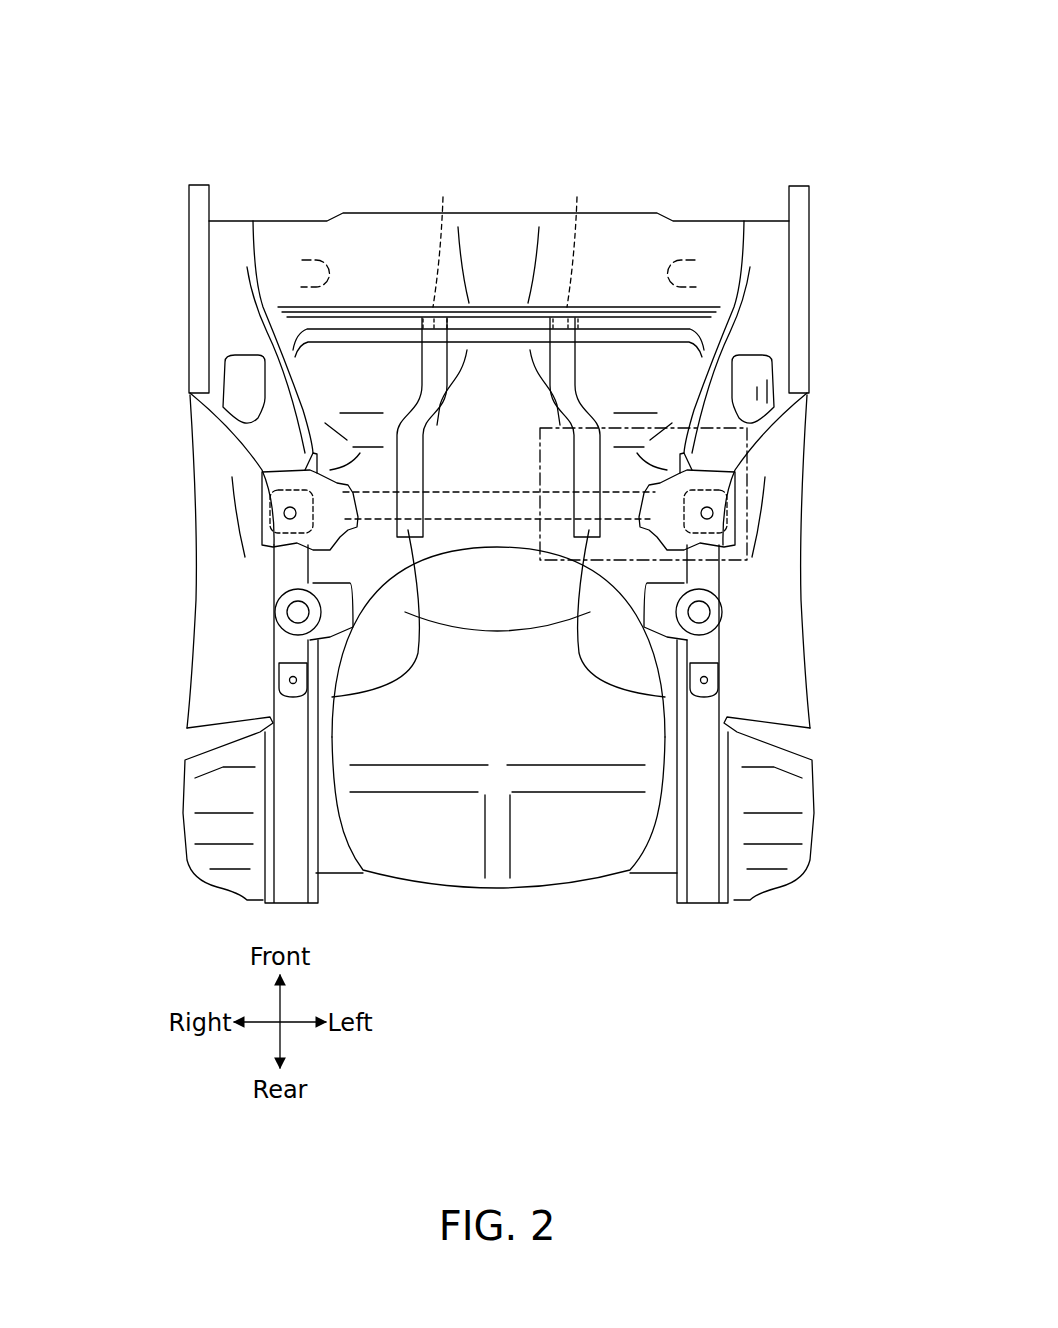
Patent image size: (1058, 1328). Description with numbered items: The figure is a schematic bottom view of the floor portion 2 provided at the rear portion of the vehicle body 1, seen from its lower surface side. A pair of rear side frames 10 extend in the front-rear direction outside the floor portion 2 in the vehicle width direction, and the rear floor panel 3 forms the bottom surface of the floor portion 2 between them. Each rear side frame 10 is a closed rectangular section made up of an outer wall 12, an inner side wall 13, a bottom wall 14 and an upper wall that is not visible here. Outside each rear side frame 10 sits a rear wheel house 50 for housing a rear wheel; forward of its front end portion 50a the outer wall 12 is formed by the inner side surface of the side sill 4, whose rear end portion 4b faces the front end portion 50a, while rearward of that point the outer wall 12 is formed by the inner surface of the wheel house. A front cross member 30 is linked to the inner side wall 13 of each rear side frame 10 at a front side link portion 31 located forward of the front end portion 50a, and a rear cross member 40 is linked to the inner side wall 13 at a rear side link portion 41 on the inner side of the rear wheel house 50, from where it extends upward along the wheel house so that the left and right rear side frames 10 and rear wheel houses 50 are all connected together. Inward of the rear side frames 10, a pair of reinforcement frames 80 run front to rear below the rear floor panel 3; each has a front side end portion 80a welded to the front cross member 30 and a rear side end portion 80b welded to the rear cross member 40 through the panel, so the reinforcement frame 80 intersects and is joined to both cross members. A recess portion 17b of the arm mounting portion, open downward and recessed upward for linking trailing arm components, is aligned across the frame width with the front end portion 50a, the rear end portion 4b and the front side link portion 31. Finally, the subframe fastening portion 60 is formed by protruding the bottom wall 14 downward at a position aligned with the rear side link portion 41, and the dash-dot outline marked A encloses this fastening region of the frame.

The vehicle body 1 is at (727, 116).
The floor portion 2 is at (525, 168).
The rear floor panel 3 is at (613, 247).
The side sill 4 is at (197, 228).
The rear end portion of side sill 4b is at (190, 394).
The rear side frame 10 is at (266, 440).
The outer wall 12 is at (213, 245).
The inner side wall 13 is at (260, 283).
The bottom wall 14 is at (228, 272).
The recess portion 17b is at (228, 362).
The front cross member 30 is at (634, 312).
The front side link portion 31 is at (716, 327).
The rear cross member 40 is at (611, 526).
The rear side link portion 41 is at (326, 515).
The rear wheel house 50 is at (219, 553).
The front end portion of rear wheel house 50a is at (196, 408).
The subframe fastening portion 60 is at (257, 506).
The reinforcement frame 80 is at (410, 387).
The front side end portion 80a is at (517, 237).
The rear side end portion 80b is at (395, 687).
The region A is at (747, 535).